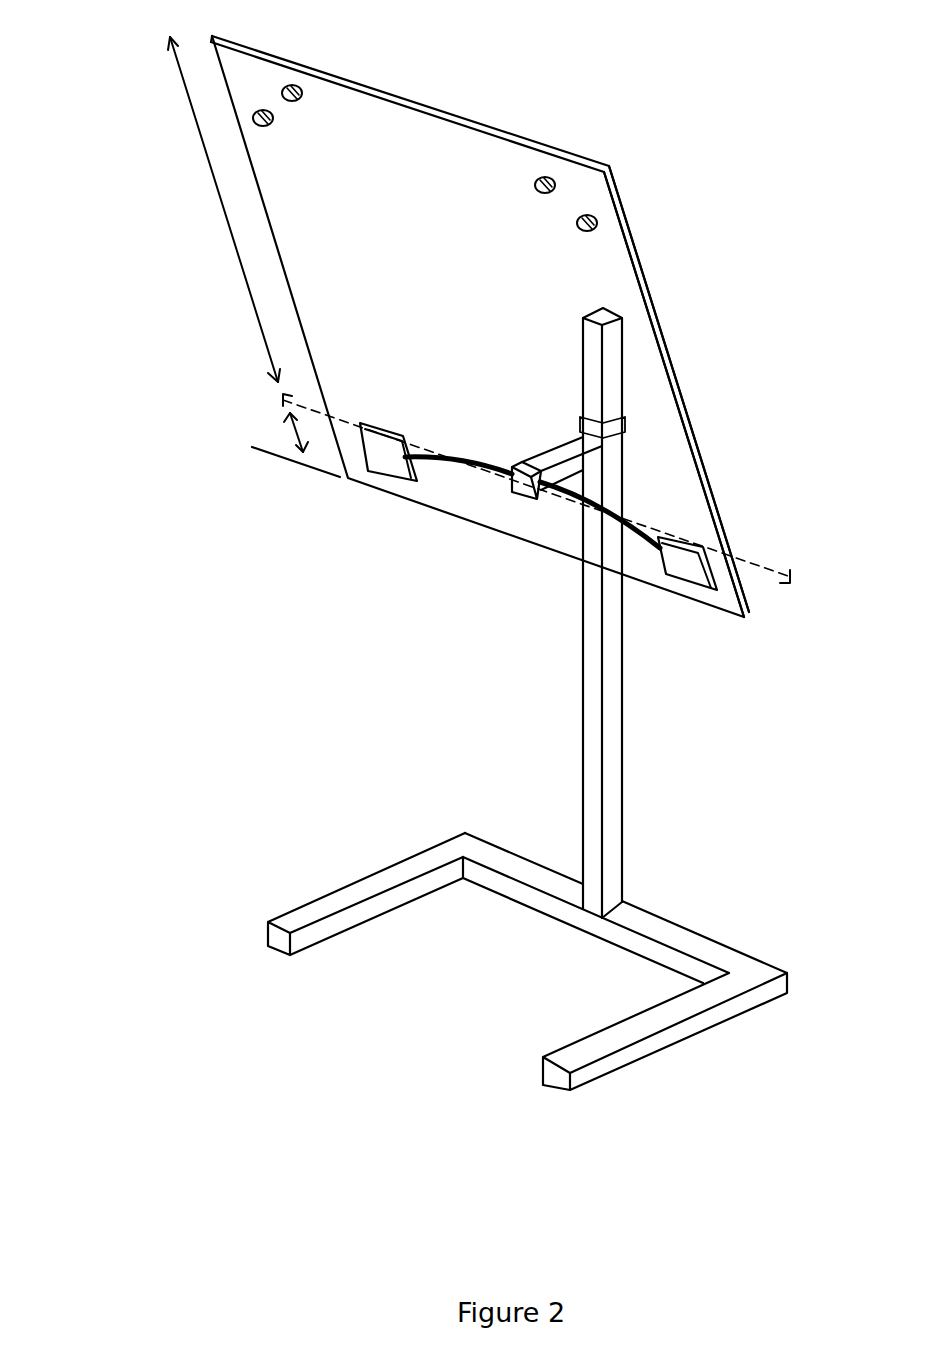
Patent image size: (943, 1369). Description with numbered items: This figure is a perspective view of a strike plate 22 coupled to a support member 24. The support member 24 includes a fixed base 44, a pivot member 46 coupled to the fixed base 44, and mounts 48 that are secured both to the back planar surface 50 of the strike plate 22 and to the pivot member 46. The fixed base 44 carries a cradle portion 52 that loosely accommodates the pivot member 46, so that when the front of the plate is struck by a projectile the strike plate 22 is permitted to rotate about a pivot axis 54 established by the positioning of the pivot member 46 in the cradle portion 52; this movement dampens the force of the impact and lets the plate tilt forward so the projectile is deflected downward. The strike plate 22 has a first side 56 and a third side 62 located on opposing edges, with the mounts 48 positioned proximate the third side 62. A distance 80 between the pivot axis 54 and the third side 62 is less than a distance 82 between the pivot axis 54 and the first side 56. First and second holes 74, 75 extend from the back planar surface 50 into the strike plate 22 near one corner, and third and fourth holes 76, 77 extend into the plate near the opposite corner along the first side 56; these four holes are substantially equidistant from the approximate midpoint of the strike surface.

The strike plate 22 is at (701, 402).
The support member 24 is at (624, 613).
The fixed base 44 is at (527, 961).
The pivot member 46 is at (467, 471).
The mounts 48 is at (538, 506).
The back planar surface 50 is at (699, 315).
The cradle portion 52 is at (518, 452).
The pivot axis 54 is at (560, 500).
The first side 56 is at (200, 36).
The third side 62 is at (267, 452).
The first hole 74 is at (273, 139).
The second hole 75 is at (305, 112).
The third hole 76 is at (546, 205).
The fourth hole 77 is at (591, 243).
The distance 80 is at (276, 432).
The distance 82 is at (224, 209).